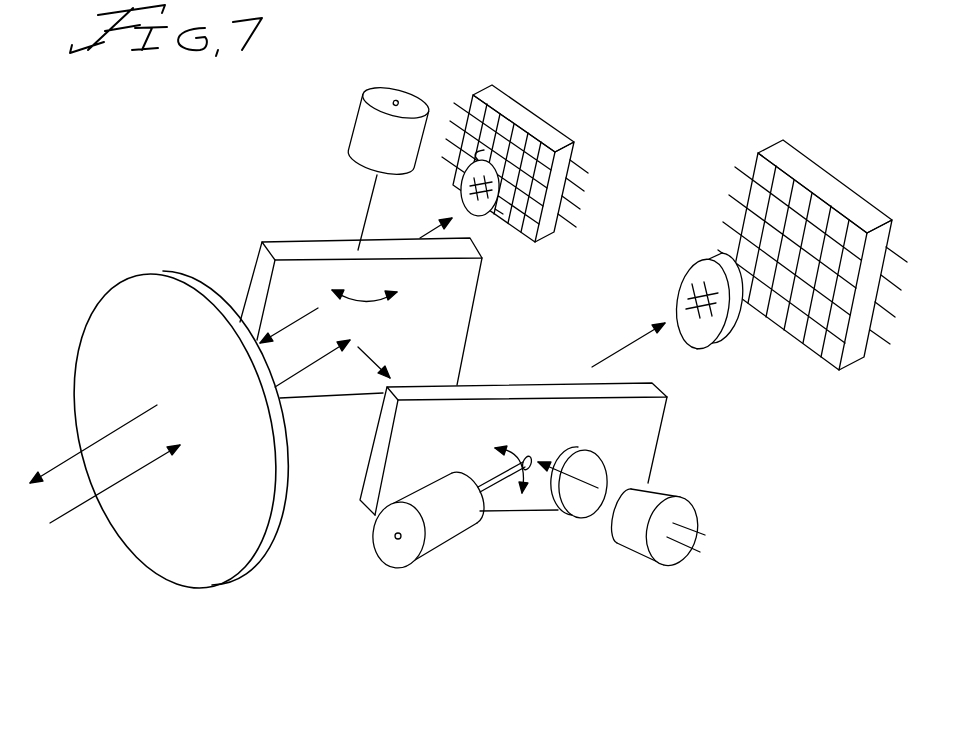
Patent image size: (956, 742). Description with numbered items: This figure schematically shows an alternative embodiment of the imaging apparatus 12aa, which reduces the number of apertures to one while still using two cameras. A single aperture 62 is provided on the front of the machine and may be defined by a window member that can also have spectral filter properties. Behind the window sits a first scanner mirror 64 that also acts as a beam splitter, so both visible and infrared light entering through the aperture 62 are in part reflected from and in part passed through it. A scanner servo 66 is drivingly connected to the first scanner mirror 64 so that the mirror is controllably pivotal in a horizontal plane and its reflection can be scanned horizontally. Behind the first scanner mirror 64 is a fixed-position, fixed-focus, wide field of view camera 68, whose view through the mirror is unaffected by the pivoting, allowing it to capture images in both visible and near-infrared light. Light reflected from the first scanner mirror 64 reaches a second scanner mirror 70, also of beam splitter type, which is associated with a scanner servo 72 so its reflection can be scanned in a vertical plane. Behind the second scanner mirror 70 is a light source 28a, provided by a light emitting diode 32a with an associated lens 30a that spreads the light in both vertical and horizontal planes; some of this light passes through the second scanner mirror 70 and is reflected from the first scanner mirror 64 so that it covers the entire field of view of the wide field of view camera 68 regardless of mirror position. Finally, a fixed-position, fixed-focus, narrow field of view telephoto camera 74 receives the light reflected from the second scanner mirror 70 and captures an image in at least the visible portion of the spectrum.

The apparatus 12aa is at (275, 635).
The light source 28a is at (587, 555).
The lens 30a is at (620, 478).
The light emitting diode 32a is at (641, 537).
The aperture 62 is at (115, 322).
The first scanner mirror 64 is at (300, 278).
The scanner servo 66 is at (363, 132).
The wide field of view camera 68 is at (547, 133).
The second scanner mirror 70 is at (538, 380).
The scanner servo 72 is at (433, 540).
The narrow field of view camera 74 is at (808, 227).